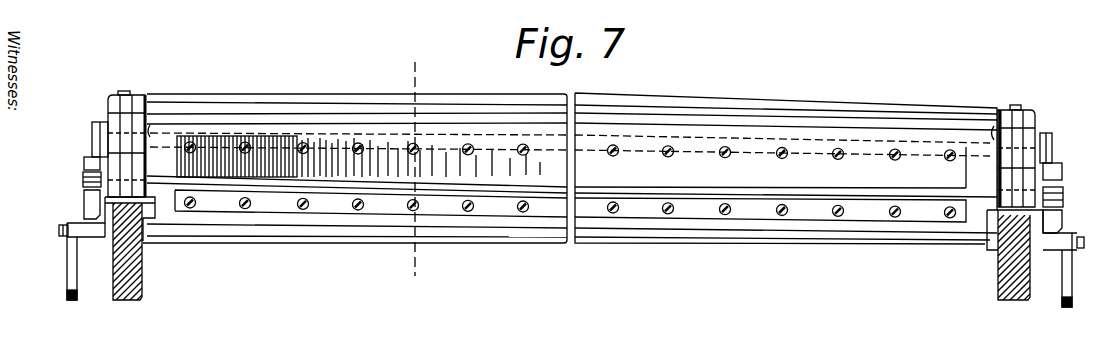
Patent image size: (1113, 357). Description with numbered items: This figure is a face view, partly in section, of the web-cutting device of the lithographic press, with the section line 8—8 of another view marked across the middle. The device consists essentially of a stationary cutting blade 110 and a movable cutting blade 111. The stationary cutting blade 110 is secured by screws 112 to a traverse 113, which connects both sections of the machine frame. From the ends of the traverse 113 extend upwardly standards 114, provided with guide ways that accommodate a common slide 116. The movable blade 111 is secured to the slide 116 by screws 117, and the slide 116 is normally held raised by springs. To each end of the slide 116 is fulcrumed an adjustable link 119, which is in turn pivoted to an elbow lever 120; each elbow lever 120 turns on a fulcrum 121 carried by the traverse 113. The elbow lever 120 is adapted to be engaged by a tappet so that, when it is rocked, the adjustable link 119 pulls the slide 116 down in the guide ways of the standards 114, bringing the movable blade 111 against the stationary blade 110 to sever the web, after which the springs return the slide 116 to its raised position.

The section line 8— 8 is at (413, 170).
The stationary cutting blade 110 is at (648, 208).
The movable cutting blade 111 is at (265, 157).
The screws 112 is at (522, 211).
The traverse 113 is at (325, 222).
The standards 114 is at (138, 118).
The slide 116 is at (110, 118).
The screws 117 is at (781, 148).
The adjustable link 119 is at (82, 179).
The elbow lever 120 is at (68, 258).
The fulcrum 121 is at (59, 233).